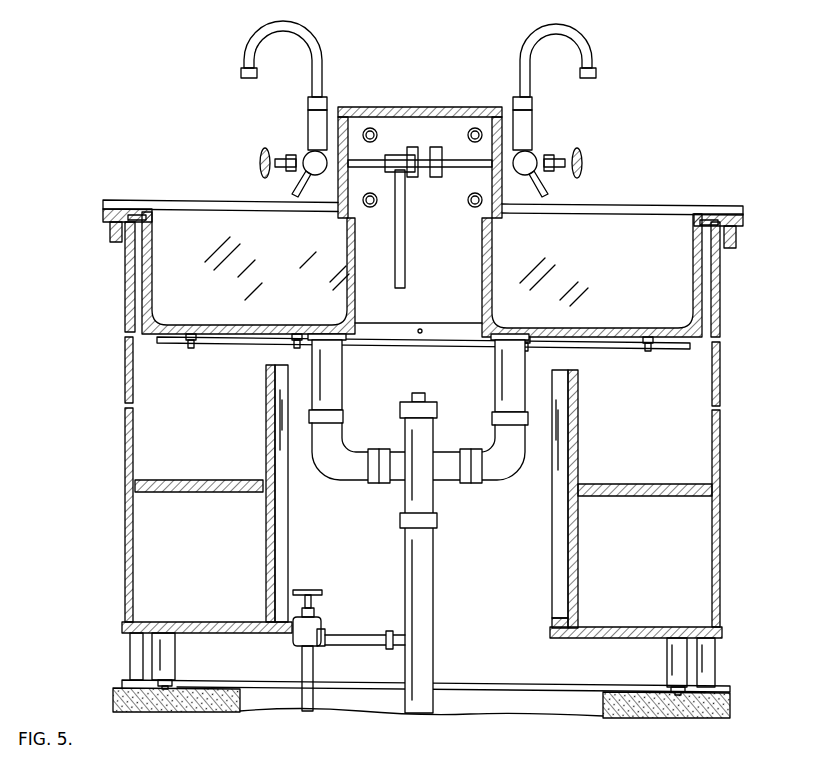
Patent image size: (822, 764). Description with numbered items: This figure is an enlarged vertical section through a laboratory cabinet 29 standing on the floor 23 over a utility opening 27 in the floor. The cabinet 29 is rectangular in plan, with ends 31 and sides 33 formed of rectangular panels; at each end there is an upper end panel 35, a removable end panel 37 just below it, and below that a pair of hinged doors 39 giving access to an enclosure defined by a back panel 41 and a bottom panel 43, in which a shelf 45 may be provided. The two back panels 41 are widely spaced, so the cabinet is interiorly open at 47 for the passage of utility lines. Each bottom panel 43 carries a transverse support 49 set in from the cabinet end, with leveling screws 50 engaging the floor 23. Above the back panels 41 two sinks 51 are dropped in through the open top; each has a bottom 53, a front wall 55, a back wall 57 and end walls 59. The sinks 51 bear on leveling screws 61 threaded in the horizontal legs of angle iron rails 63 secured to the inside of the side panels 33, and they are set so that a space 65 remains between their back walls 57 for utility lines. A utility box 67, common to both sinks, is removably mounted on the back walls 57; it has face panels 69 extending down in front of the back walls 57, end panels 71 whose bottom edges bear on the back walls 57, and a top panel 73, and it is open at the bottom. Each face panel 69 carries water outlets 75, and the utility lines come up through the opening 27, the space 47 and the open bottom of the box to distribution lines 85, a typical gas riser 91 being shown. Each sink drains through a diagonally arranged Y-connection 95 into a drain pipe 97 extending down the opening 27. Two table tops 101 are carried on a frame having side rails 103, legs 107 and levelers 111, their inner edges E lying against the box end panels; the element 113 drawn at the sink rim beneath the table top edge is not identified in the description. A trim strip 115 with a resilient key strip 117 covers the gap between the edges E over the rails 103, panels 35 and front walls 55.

The floor 23 is at (148, 695).
The utility opening 27 is at (255, 704).
The cabinet 29 is at (737, 197).
The cabinet end 31 is at (124, 437).
The cabinet side 33 is at (505, 692).
The upper end panel 35 is at (125, 290).
The end panel 37 is at (125, 378).
The hinged doors 39 is at (125, 532).
The back panel 41 is at (278, 511).
The bottom panel 43 is at (200, 622).
The shelf 45 is at (205, 480).
The interior open space 47 is at (455, 662).
The transverse support 49 is at (176, 650).
The leveling screw 50 is at (180, 683).
The sink 51 is at (150, 341).
The sink bottom 53 is at (250, 325).
The front wall 55 is at (153, 258).
The back wall 57 is at (347, 262).
The end wall 59 is at (340, 300).
The leveling screw 61 is at (188, 350).
The angle iron rail 63 is at (232, 350).
The space 65 is at (492, 290).
The utility box 67 is at (344, 106).
The face panel 69 is at (340, 222).
The end panel 71 is at (465, 128).
The top panel 73 is at (418, 107).
The water outlet 75 is at (282, 30).
The distribution lines 85 is at (380, 135).
The gas riser 91 is at (392, 630).
The Y-connection 95 is at (336, 470).
The drain pipe 97 is at (432, 556).
The table top 101 is at (590, 206).
The side rail 103 is at (112, 240).
The leg 107 is at (130, 644).
The leveler 111 is at (124, 684).
The sink rim 113 is at (148, 224).
The trim strip 115 is at (103, 212).
The resilient key strip 117 is at (130, 206).
The inner edge E is at (216, 203).